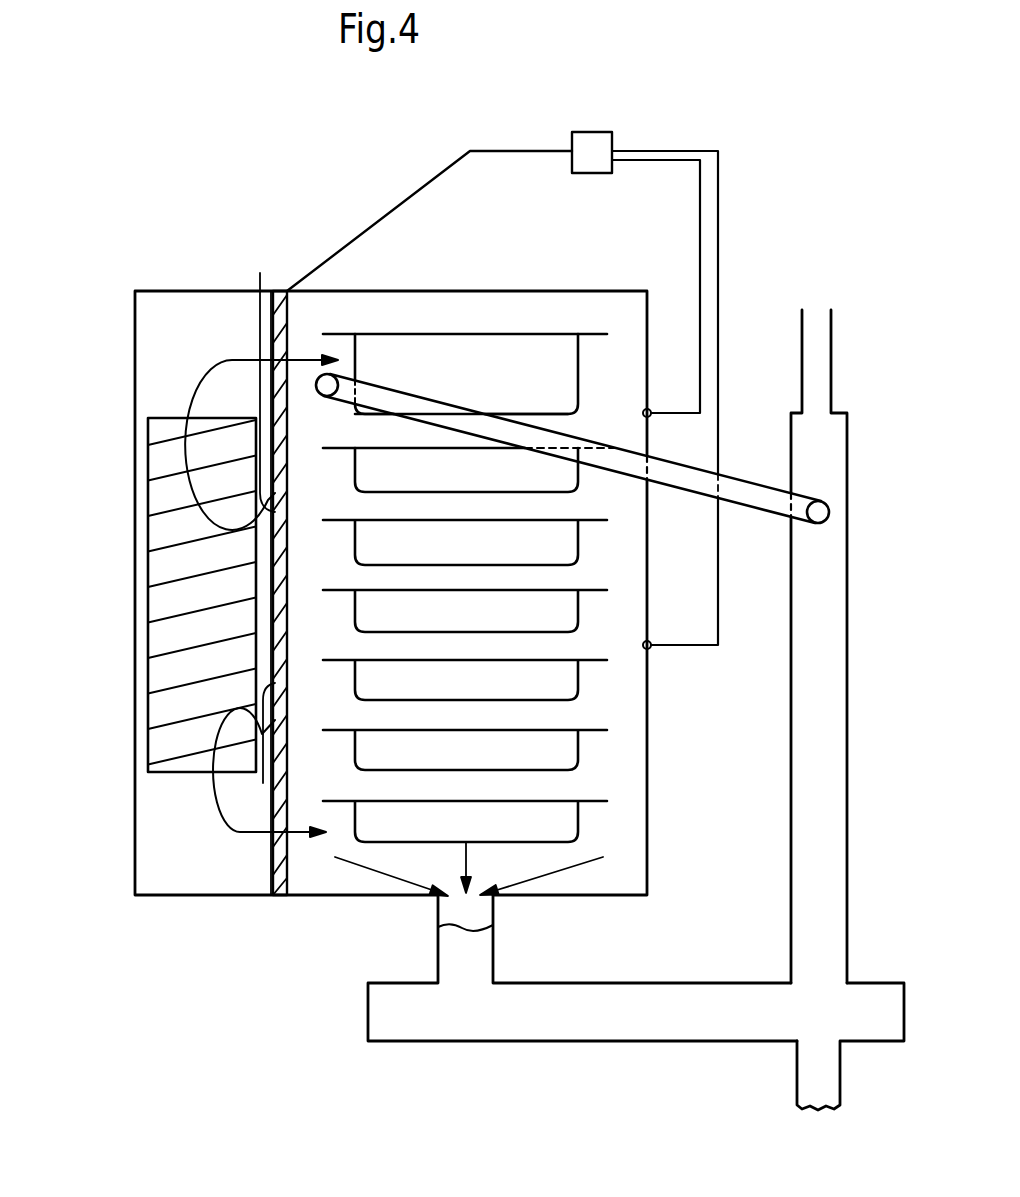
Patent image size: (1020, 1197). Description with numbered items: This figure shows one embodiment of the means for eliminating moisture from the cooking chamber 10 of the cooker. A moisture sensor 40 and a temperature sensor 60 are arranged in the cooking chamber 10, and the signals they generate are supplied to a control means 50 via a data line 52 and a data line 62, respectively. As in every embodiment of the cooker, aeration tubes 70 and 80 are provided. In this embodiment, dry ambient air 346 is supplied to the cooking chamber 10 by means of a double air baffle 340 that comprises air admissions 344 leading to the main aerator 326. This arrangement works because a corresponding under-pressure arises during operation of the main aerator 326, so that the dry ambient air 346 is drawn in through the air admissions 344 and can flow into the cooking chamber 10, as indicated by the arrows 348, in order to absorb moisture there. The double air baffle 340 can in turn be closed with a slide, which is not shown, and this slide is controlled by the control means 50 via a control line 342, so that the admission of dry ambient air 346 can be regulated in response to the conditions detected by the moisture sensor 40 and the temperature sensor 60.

The cooking chamber 10 is at (640, 768).
The moisture sensor 40 is at (650, 648).
The control means 50 is at (592, 145).
The data line 52 is at (718, 217).
The temperature sensor 60 is at (650, 410).
The data line 62 is at (700, 265).
The aeration tube 70 is at (735, 478).
The aeration tube 80 is at (847, 562).
The main aerator 326 is at (177, 632).
The double air baffle 340 is at (271, 291).
The control line 342 is at (428, 181).
The air admissions 344 is at (260, 273).
The dry ambient air 346 is at (278, 262).
The arrows 348 is at (195, 398).